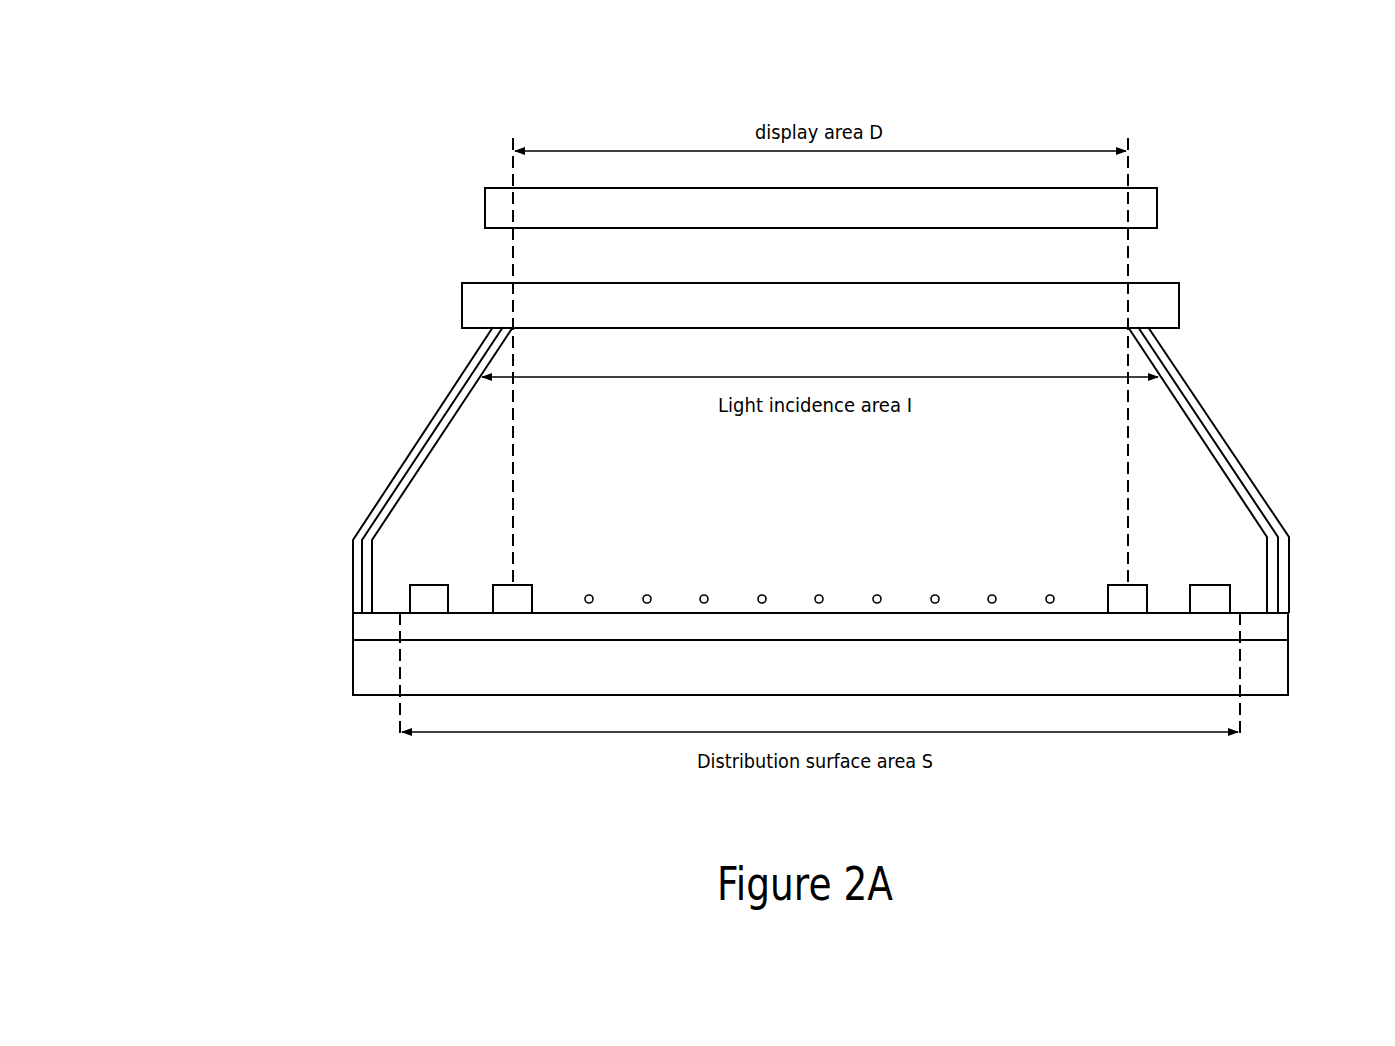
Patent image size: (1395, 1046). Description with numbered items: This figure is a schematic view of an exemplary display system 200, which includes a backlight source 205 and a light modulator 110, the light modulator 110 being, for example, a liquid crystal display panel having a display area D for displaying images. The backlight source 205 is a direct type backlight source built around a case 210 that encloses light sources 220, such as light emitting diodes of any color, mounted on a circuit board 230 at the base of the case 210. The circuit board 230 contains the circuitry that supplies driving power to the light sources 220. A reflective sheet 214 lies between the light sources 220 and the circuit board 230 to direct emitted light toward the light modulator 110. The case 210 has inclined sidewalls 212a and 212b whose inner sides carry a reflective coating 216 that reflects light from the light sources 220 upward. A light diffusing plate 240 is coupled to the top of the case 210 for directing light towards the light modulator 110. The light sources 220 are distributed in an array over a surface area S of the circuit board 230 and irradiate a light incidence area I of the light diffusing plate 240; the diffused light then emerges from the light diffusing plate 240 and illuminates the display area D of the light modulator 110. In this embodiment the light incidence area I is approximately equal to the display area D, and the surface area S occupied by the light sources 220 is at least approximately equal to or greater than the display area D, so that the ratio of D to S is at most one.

The display system 200 is at (252, 45).
The light modulator 110 is at (1147, 207).
The light diffusing plate 240 is at (1165, 303).
The case 210 is at (1263, 442).
The sidewall 212a is at (450, 390).
The sidewall 212b is at (1257, 510).
The reflective coating 216 is at (427, 452).
The light sources 220 is at (440, 593).
The reflective sheet 214 is at (358, 627).
The circuit board 230 is at (358, 670).
The backlight source 205 is at (192, 254).